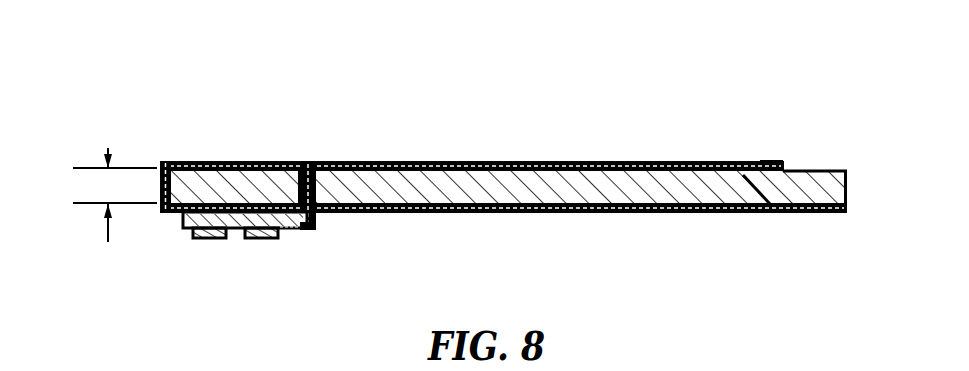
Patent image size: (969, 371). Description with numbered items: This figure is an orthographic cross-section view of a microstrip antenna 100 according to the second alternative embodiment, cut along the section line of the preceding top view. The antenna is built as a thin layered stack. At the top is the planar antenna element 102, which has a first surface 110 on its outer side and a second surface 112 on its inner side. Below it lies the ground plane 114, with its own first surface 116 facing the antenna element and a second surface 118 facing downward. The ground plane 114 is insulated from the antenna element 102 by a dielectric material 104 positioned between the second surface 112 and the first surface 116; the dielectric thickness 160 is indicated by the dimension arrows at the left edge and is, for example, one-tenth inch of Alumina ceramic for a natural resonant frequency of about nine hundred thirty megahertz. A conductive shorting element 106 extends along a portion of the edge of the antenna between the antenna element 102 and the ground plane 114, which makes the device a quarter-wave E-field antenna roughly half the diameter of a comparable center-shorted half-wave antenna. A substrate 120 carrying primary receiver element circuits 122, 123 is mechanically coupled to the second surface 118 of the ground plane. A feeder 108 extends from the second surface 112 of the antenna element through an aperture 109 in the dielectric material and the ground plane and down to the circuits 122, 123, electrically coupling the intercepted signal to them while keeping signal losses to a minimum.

The microstrip antenna 100 is at (484, 176).
The antenna element 102 is at (785, 166).
The dielectric material 104 is at (847, 192).
The conductive shorting element 106 is at (167, 161).
The feeder 108 is at (315, 232).
The aperture 109 is at (297, 161).
The first surface 110 is at (412, 162).
The second surface 112 is at (778, 214).
The ground plane 114 is at (847, 212).
The first surface 116 is at (467, 205).
The second surface 118 is at (587, 215).
The substrate 120 is at (187, 226).
The primary receiver element circuit 122 is at (210, 238).
The primary receiver element circuit 123 is at (262, 238).
The dielectric thickness 160 is at (110, 136).